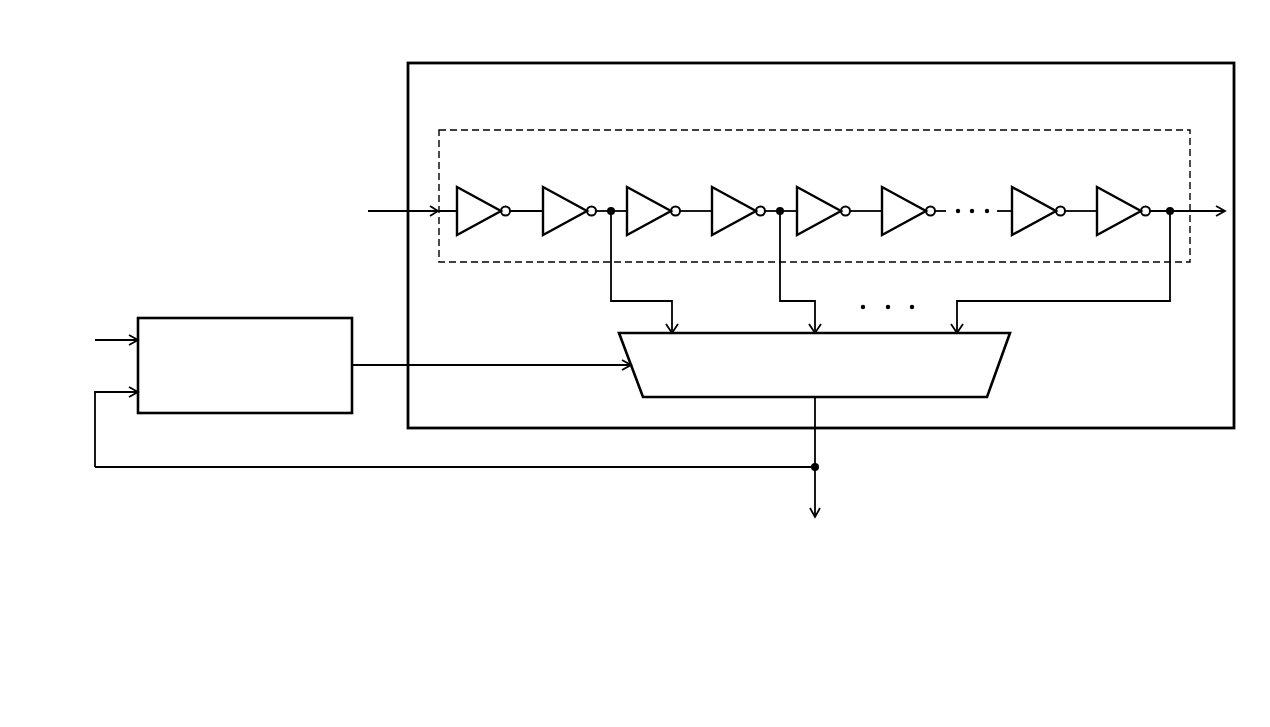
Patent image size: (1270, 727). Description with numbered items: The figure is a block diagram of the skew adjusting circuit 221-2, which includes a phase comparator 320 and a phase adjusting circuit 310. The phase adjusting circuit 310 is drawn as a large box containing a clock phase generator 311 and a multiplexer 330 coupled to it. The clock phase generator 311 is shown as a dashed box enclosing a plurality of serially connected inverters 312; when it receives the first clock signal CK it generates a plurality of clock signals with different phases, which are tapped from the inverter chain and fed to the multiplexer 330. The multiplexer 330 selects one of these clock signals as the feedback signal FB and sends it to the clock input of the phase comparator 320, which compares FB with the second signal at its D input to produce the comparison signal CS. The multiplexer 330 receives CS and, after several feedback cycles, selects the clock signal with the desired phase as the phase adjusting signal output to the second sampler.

The phase adjusting circuit 310 is at (1005, 63).
The clock phase generator 311 is at (1003, 130).
The inverter 312 is at (485, 197).
The phase comparator 320 is at (315, 318).
The multiplexer 330 is at (1000, 365).
The skew adjusting circuit 221-2 is at (1228, 567).